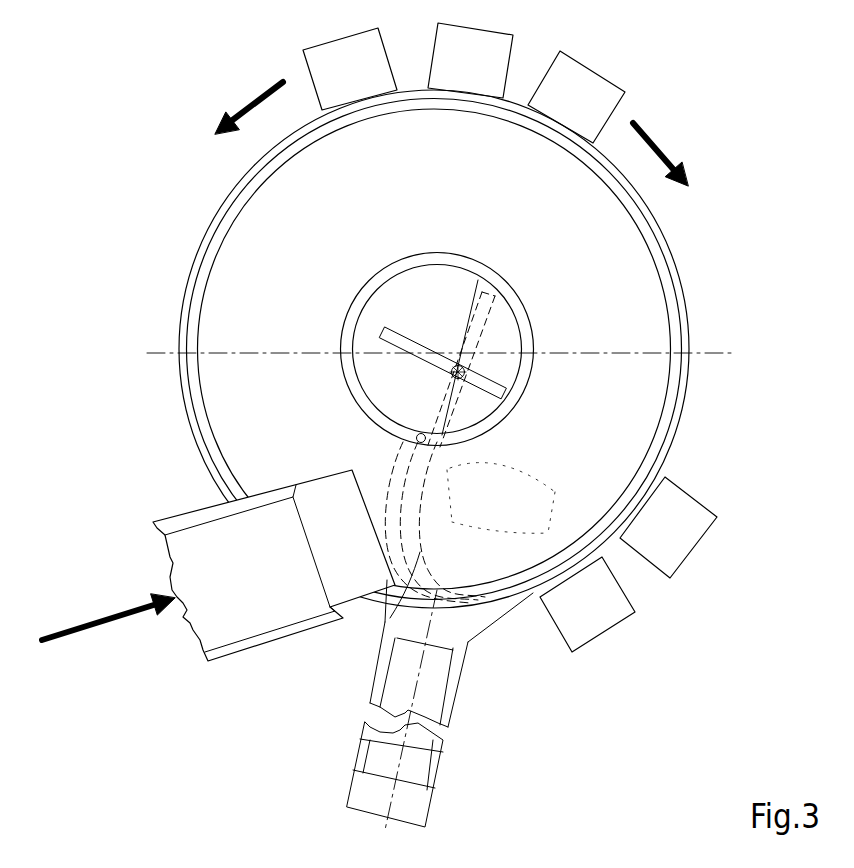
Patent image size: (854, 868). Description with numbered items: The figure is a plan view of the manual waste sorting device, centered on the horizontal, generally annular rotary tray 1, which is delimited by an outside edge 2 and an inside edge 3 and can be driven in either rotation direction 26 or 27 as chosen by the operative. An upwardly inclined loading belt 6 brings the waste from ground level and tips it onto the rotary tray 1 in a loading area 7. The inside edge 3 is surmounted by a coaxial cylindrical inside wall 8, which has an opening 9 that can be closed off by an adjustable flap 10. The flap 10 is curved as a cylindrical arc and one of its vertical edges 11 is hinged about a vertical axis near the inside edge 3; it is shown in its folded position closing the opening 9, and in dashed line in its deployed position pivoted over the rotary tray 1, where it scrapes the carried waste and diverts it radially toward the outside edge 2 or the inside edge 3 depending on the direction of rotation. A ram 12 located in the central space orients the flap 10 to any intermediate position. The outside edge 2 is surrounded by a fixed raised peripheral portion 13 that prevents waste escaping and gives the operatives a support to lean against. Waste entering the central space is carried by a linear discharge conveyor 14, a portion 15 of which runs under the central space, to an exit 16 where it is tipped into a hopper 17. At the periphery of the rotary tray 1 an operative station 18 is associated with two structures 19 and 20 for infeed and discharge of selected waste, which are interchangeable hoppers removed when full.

The rotary tray 1 is at (648, 313).
The outside edge 2 is at (648, 248).
The inside edge 3 is at (520, 273).
The loading belt 6 is at (222, 530).
The loading area 7 is at (387, 608).
The inside wall 8 is at (345, 344).
The opening 9 is at (535, 372).
The adjustable flap 10 is at (500, 413).
The vertical edge 11 is at (428, 428).
The ram 12 is at (397, 328).
The peripheral portion 13 is at (665, 280).
The discharge conveyor 14 is at (437, 692).
The portion of the discharge conveyor 15 is at (520, 333).
The exit 16 is at (418, 770).
The hopper 17 is at (422, 802).
The operative station 18 is at (660, 612).
The structure for infeed and discharge of selected waste 19 is at (612, 620).
The structure for infeed and discharge of selected waste 20 is at (685, 538).
The rotation direction 26 is at (250, 97).
The rotation direction 27 is at (660, 140).